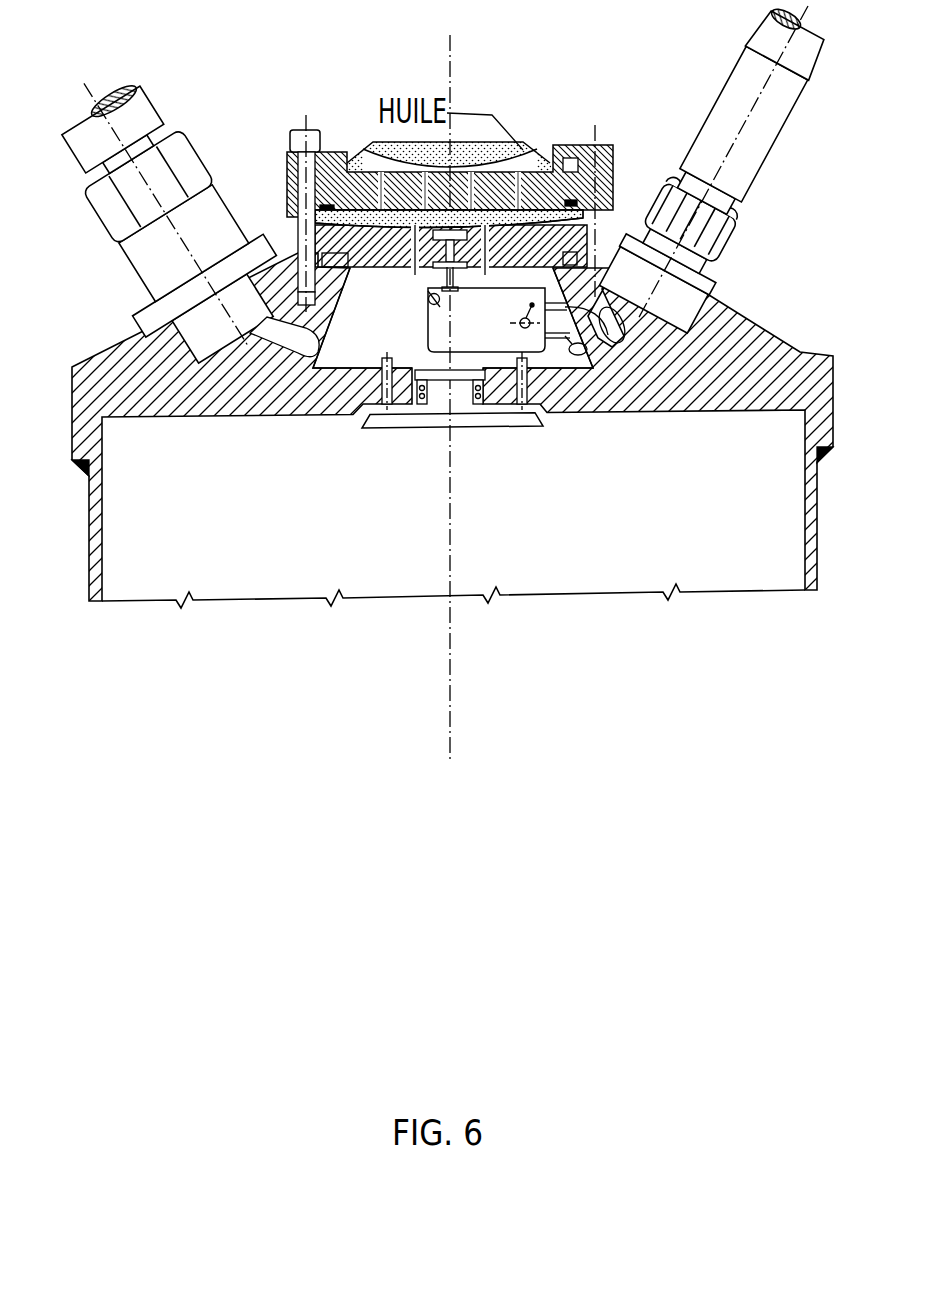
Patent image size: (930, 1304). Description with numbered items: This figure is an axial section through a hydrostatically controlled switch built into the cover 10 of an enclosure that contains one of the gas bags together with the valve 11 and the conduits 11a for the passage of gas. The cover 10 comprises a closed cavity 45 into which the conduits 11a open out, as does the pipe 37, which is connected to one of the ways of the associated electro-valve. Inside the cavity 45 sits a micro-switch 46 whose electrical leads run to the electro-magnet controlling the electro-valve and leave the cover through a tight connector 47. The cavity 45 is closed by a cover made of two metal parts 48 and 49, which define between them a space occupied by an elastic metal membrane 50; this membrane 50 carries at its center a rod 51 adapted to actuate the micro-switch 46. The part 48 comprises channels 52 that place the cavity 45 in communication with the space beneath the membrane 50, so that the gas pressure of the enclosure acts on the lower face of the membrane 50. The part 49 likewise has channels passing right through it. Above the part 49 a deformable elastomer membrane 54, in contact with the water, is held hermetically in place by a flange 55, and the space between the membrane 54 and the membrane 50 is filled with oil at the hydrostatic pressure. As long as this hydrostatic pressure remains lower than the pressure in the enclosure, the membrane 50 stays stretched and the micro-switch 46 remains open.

The cover 10 is at (747, 368).
The valve 11 is at (491, 423).
The conduits 11a is at (385, 388).
The way 37 is at (143, 117).
The cavity 45 is at (453, 318).
The micro-switch 46 is at (533, 373).
The tight connector 47 is at (698, 283).
The metal part 48 is at (563, 242).
The metal part 49 is at (286, 200).
The elastic metal membrane 50 is at (368, 146).
The rod 51 is at (429, 302).
The channels 52 is at (484, 268).
The deformable membrane 54 is at (533, 150).
The flange 55 is at (600, 157).